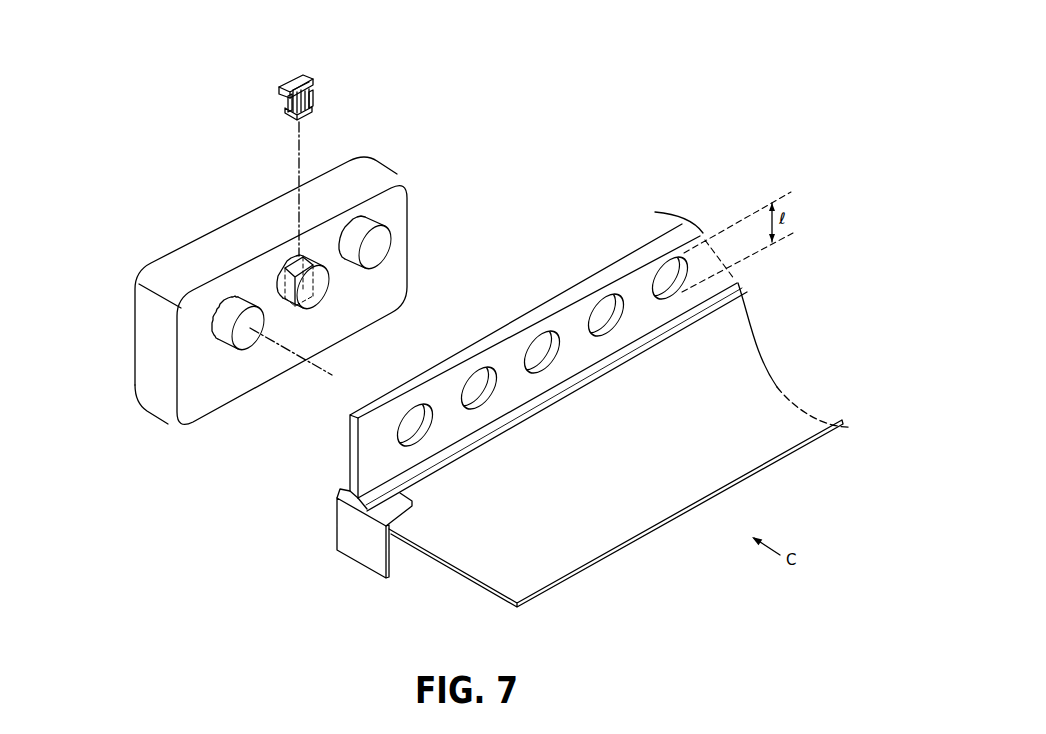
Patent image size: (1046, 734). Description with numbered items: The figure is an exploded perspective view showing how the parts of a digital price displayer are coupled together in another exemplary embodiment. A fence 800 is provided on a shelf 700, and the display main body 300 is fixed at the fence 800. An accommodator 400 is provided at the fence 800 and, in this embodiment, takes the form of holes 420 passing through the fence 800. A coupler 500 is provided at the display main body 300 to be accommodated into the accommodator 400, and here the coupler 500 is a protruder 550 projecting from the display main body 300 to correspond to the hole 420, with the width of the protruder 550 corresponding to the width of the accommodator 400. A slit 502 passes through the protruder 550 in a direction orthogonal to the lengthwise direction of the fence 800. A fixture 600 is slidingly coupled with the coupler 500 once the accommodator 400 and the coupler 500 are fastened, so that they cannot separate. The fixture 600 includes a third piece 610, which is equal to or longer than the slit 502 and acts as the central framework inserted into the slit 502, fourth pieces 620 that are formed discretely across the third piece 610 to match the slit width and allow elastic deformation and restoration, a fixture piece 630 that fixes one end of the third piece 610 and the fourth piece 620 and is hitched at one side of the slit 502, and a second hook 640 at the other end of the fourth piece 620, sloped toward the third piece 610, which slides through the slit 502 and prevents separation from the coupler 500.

The display main body 300 is at (363, 170).
The accommodator 400 is at (571, 351).
The hole 420 is at (408, 429).
The coupler 500 is at (248, 273).
The slit 502 is at (296, 256).
The protruder 550 is at (238, 331).
The fixture 600 is at (316, 78).
The third piece 610 is at (306, 89).
The fourth piece 620 is at (313, 97).
The fixture piece 630 is at (296, 82).
The second hook 640 is at (330, 120).
The shelf 700 is at (636, 482).
The fence 800 is at (370, 456).